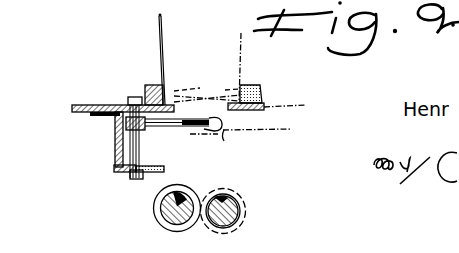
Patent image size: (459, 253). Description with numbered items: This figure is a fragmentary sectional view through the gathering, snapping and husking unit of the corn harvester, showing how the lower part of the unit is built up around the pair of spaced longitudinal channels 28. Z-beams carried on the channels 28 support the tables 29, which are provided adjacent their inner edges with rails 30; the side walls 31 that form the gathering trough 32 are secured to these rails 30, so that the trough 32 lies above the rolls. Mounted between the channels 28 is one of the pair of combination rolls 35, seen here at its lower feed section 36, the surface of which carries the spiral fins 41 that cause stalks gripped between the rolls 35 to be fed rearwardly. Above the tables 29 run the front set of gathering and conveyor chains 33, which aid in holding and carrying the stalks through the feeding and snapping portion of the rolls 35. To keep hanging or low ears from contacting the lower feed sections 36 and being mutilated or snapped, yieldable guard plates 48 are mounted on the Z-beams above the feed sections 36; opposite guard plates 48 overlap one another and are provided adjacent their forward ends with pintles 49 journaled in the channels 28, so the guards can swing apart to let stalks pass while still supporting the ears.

The longitudinal channels 28 is at (118, 172).
The tables 29 is at (84, 105).
The rails 30 is at (153, 85).
The side walls 31 is at (165, 65).
The gathering trough 32 is at (246, 71).
The front set of gathering and conveyor chains 33 is at (174, 86).
The combination rolls 35 is at (201, 191).
The lower feed sections 36 is at (239, 204).
The spiral fins 41 is at (232, 192).
The yieldable guard plates 48 is at (215, 130).
The pintles 49 is at (141, 140).